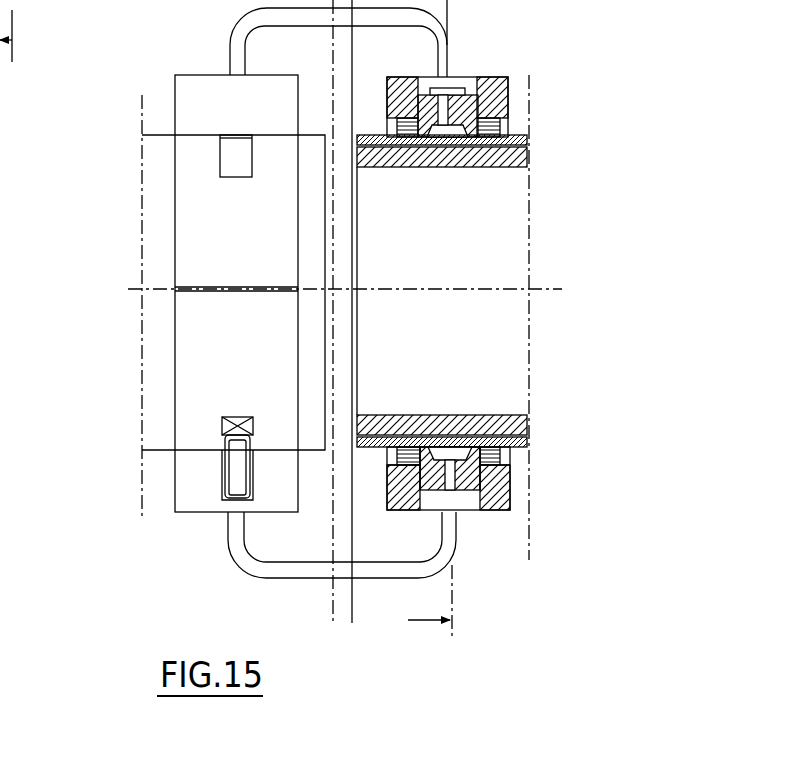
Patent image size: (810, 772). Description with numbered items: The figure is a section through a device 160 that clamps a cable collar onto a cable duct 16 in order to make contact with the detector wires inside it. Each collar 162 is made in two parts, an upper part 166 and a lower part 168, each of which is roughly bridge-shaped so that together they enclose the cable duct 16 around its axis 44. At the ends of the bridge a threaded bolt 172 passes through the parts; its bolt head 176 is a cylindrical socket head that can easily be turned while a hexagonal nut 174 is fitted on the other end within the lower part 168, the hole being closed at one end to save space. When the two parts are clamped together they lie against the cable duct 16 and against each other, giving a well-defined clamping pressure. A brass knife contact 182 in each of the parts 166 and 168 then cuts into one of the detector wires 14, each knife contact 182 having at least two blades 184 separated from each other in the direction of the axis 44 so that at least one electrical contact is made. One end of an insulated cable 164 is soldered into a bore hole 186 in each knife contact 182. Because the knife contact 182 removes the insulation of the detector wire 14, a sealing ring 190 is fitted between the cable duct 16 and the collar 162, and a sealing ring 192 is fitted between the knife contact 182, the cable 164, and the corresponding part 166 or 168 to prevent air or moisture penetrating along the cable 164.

The detector wire 14 is at (407, 150).
The cable duct 16 is at (515, 157).
The axis 44 is at (533, 287).
The device 160 is at (75, 560).
The collar 162 is at (487, 515).
The cable 164 is at (263, 568).
The upper part 166 is at (190, 112).
The lower part 168 is at (208, 503).
The threaded bolt 172 is at (230, 470).
The hexagonal nut 174 is at (225, 430).
The bolt head 176 is at (228, 167).
The knife contact 182 is at (463, 97).
The blade 184 is at (430, 447).
The bore hole 186 is at (457, 77).
The sealing ring 190 is at (413, 450).
The sealing ring 192 is at (44, 0).